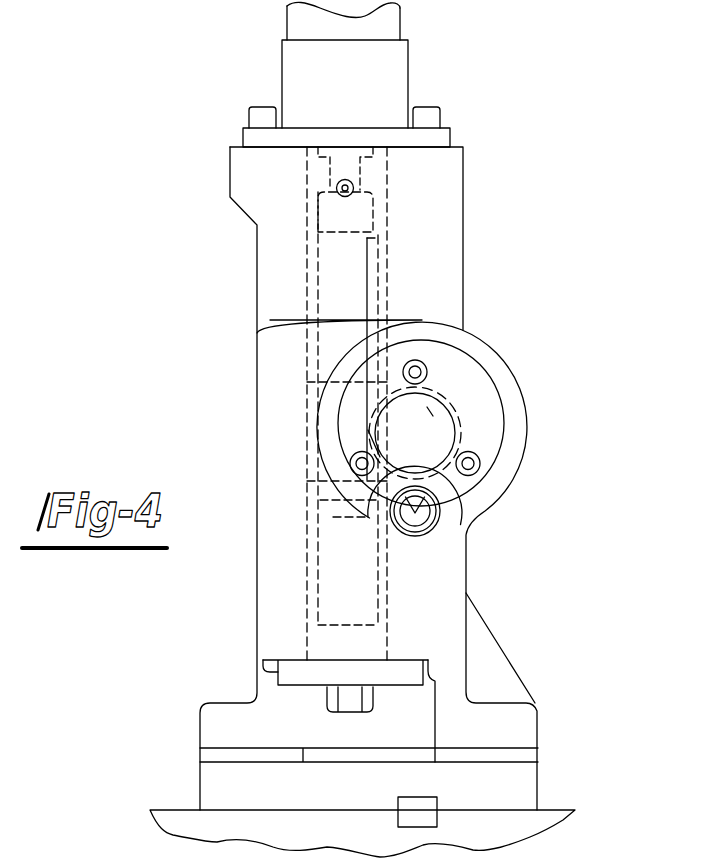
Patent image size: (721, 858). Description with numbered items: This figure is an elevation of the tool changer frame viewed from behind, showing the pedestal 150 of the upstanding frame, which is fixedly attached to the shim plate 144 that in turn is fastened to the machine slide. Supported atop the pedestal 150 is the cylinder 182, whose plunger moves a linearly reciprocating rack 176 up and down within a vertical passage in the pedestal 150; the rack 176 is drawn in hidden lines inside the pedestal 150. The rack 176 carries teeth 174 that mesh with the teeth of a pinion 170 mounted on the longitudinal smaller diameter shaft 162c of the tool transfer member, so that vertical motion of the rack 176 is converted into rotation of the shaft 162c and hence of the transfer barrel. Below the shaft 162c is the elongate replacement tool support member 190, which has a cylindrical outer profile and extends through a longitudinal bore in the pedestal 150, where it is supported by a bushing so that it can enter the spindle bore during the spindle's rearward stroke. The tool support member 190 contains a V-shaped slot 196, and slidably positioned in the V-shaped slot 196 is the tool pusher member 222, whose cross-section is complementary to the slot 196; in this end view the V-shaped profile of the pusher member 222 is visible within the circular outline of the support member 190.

The shim plate 144 is at (523, 792).
The pedestal 150 is at (448, 630).
The longitudinal smaller diameter shaft 162c is at (462, 383).
The pinion 170 is at (447, 442).
The teeth 174 is at (380, 272).
The rack 176 is at (342, 270).
The cylinder 182 is at (392, 25).
The replacement tool support member 190 is at (415, 520).
The V-shaped slot 196 is at (370, 506).
The tool pusher member 222 is at (385, 502).